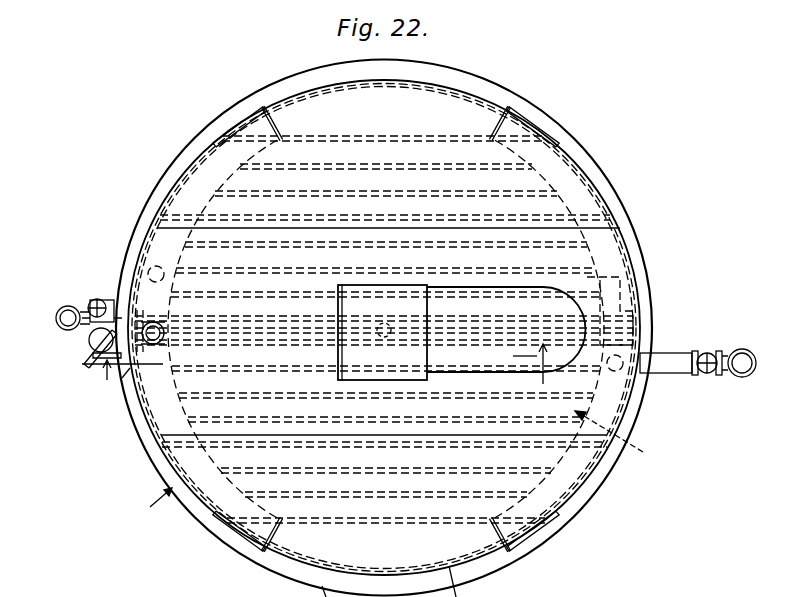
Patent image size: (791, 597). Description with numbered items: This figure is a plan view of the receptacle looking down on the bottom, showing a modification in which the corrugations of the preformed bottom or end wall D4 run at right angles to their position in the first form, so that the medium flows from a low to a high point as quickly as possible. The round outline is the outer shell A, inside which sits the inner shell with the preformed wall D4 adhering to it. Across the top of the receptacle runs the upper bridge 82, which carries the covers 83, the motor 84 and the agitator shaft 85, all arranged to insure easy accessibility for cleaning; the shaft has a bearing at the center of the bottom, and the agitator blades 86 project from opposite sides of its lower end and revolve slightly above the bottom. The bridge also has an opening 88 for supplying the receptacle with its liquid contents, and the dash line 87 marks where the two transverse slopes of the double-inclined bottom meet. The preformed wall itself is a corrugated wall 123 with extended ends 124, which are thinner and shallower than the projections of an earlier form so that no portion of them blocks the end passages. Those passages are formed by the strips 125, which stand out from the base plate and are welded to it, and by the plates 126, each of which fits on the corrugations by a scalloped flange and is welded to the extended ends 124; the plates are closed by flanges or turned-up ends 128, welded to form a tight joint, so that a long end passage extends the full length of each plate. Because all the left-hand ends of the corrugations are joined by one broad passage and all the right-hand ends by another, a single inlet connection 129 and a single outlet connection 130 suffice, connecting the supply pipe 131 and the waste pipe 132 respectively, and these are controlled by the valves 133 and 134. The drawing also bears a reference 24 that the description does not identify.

The direction arrow / gauge connection 24 is at (325, 368).
The upper bridge 82 is at (617, 243).
The covers 83 is at (445, 98).
The motor 84 is at (473, 294).
The agitator shaft 85 is at (378, 337).
The agitator blades 86 is at (84, 338).
The dash line 87 is at (228, 328).
The opening 88 is at (123, 380).
The corrugated wall 123 is at (630, 272).
The extended ends 124 is at (535, 118).
The strips 125 is at (612, 190).
The plates 126 is at (588, 157).
The turned-up ends 128 is at (270, 118).
The inlet connection 129 is at (113, 297).
The outlet connection 130 is at (668, 352).
The supply pipe 131 is at (57, 312).
The waste pipe 132 is at (753, 340).
The valve 133 is at (92, 297).
The valve 134 is at (708, 352).
The outer shell A is at (143, 510).
The preformed wall D4 is at (637, 439).